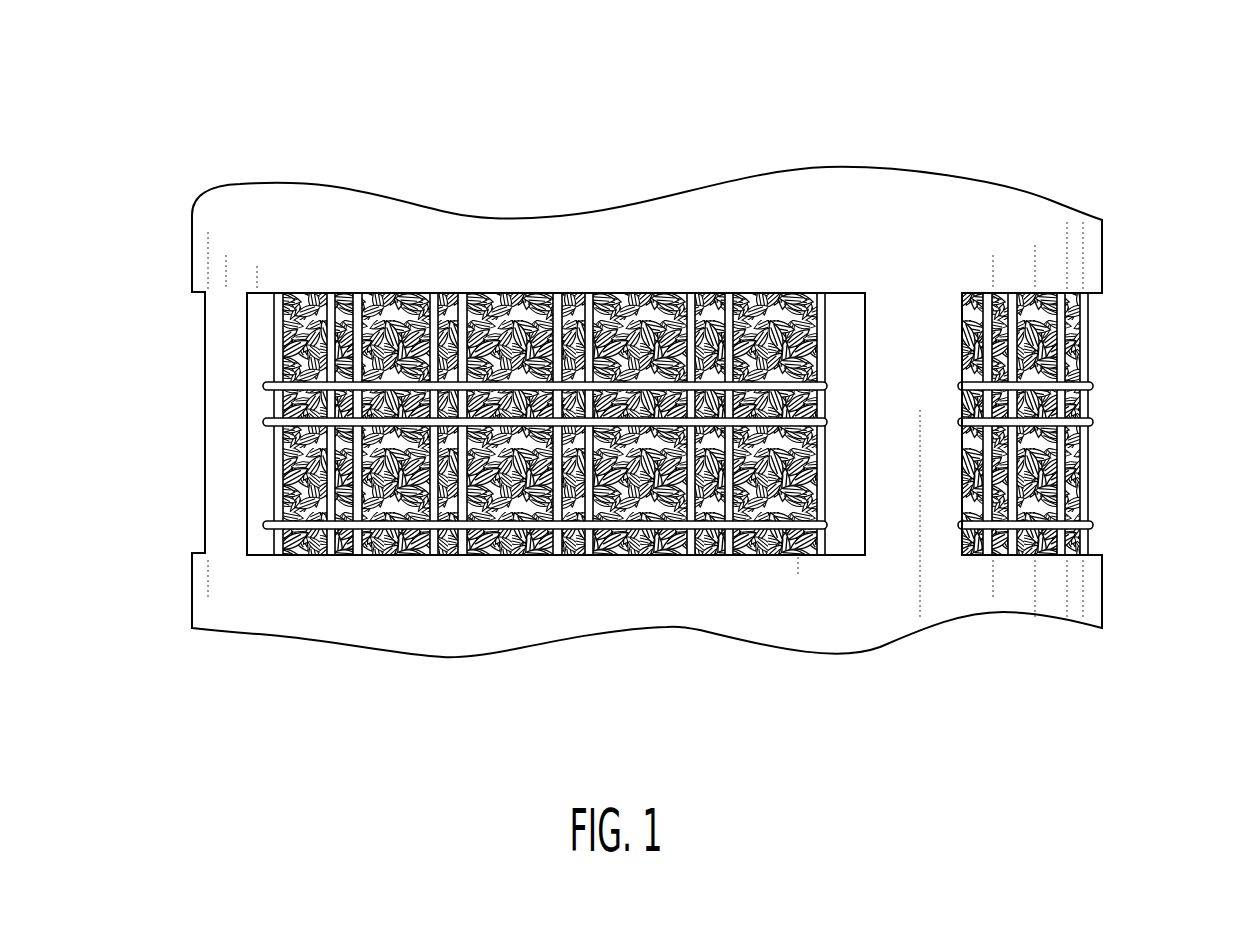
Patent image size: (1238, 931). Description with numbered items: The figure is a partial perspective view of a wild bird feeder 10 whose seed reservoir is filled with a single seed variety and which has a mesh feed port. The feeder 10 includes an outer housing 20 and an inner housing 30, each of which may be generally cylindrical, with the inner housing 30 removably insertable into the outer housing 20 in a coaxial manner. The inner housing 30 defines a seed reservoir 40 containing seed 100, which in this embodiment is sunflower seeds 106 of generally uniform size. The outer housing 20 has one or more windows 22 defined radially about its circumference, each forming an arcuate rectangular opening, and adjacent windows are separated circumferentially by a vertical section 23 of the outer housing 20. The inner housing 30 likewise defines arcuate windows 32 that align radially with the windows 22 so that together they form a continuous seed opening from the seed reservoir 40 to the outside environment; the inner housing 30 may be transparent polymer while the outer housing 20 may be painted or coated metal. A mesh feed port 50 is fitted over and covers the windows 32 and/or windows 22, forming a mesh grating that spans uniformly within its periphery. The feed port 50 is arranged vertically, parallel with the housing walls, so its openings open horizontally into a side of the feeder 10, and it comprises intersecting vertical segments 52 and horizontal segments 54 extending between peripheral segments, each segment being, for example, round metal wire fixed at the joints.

The wild bird feeder 10 is at (647, 349).
The outer housing 20 is at (425, 232).
The window 22 is at (1129, 442).
The vertical section 23 is at (905, 328).
The inner housing 30 is at (850, 537).
The window 32 is at (251, 381).
The seed reservoir 40 is at (289, 292).
The mesh feed port 50 is at (660, 293).
The vertical segment 52 is at (577, 520).
The horizontal segment 54 is at (348, 494).
The seed 100 is at (481, 503).
The black oil sunflower seed 106 is at (483, 520).